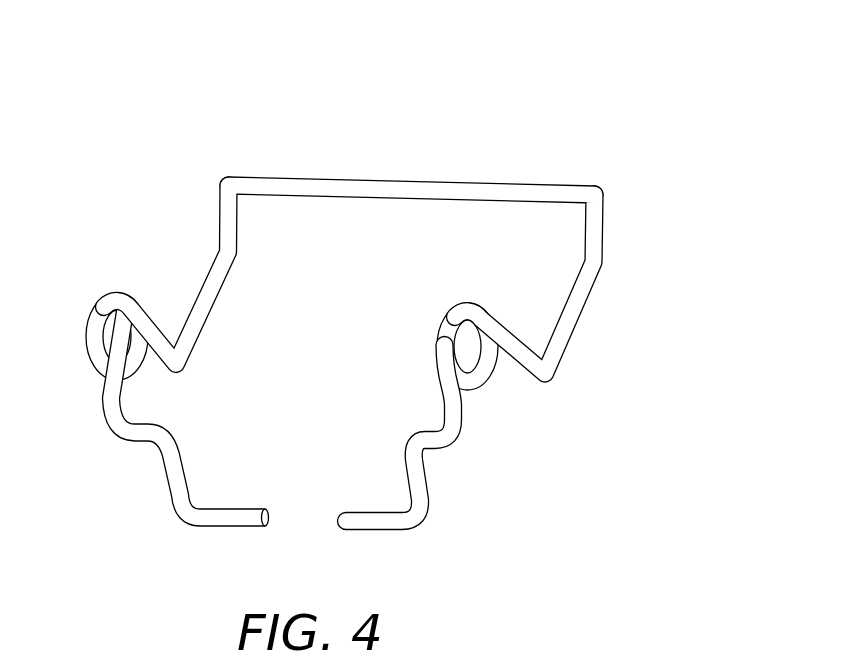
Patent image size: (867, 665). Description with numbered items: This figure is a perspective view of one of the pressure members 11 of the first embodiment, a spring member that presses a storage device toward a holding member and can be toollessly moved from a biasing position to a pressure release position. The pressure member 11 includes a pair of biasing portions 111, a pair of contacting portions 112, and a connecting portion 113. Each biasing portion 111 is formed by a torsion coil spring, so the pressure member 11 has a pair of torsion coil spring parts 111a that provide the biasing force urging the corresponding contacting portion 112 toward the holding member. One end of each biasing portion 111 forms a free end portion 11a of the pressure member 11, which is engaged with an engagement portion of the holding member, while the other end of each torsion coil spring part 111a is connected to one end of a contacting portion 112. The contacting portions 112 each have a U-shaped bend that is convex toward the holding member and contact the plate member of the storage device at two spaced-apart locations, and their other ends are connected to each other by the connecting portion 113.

The pressure member 11 is at (373, 334).
The free end portion 11a is at (245, 516).
The biasing portion 111 is at (315, 338).
The torsion coil spring part 111a is at (125, 295).
The contacting portion 112 is at (188, 370).
The connecting portion 113 is at (363, 181).